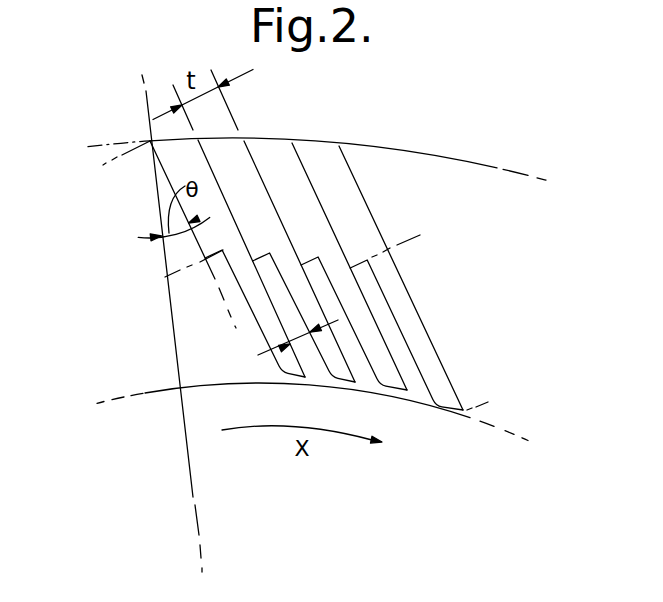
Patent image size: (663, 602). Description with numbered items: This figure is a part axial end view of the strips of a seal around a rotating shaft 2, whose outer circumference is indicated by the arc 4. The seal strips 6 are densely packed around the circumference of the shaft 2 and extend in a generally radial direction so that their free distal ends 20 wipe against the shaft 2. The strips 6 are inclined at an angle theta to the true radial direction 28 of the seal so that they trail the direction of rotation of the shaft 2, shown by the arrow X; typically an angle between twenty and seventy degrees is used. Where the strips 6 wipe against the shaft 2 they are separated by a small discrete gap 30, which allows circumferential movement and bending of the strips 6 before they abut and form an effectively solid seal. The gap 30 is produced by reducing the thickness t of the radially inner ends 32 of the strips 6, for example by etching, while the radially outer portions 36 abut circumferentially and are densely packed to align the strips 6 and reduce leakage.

The shaft 2 is at (470, 421).
The outer peripheral surface 4 is at (398, 150).
The seal strips 6 is at (280, 217).
The free distal ends 20 is at (443, 393).
The true radial direction 28 is at (157, 503).
The gap 30 is at (295, 336).
The radially inner ends 32 is at (424, 232).
The radially outer portions 36 is at (114, 161).